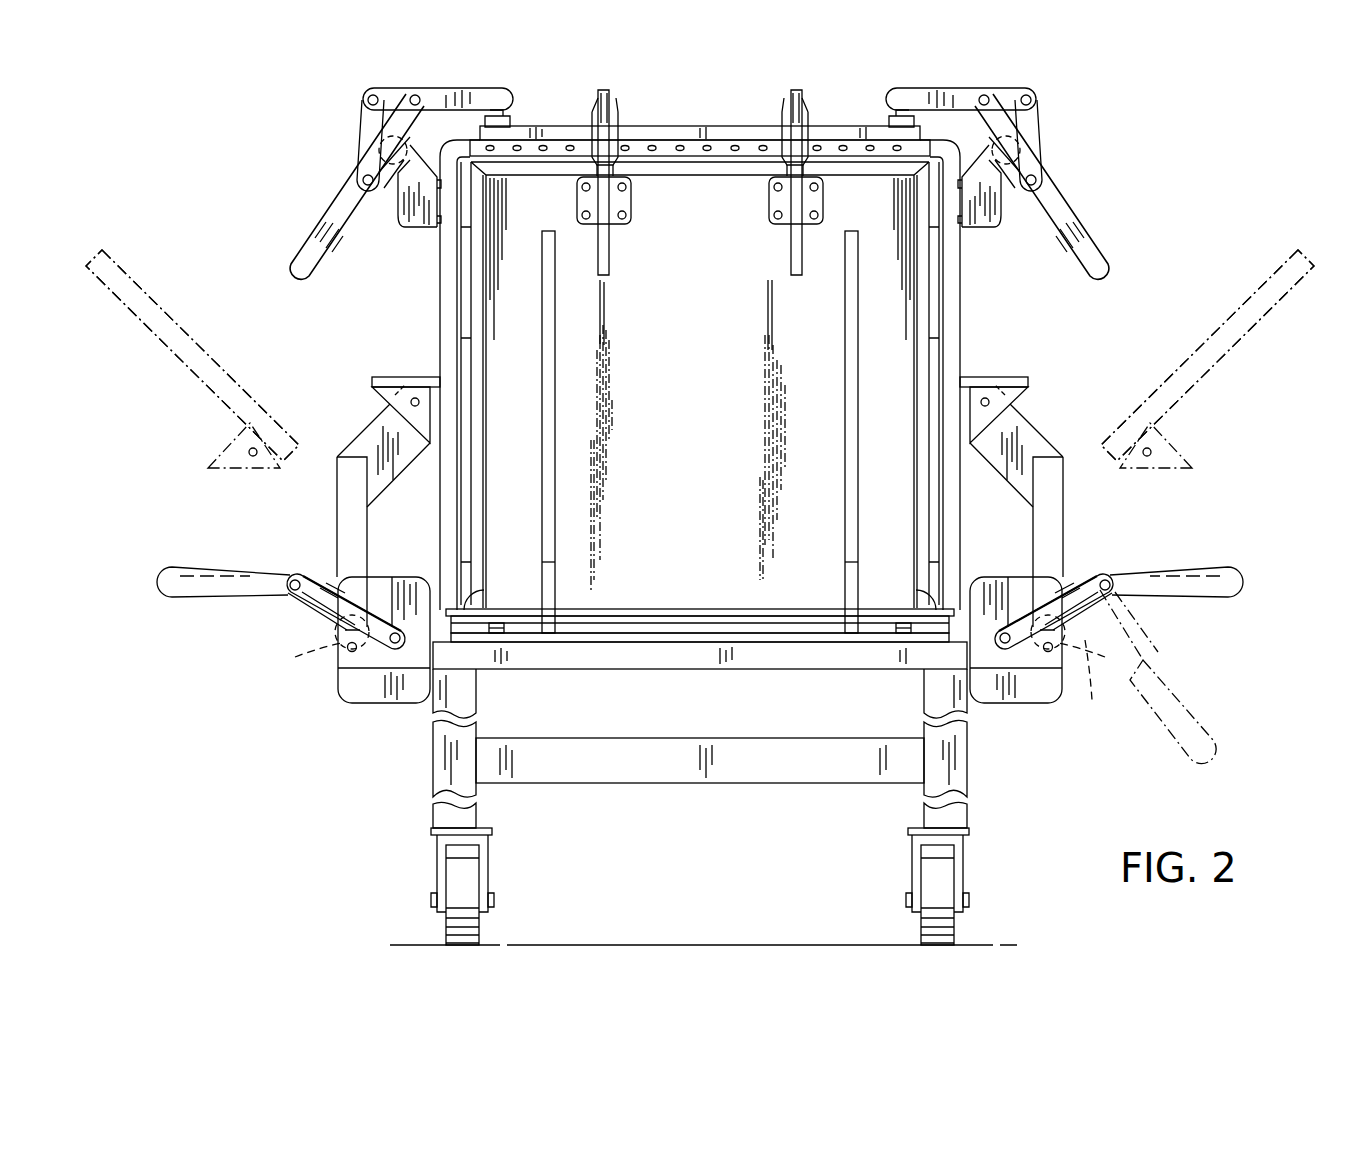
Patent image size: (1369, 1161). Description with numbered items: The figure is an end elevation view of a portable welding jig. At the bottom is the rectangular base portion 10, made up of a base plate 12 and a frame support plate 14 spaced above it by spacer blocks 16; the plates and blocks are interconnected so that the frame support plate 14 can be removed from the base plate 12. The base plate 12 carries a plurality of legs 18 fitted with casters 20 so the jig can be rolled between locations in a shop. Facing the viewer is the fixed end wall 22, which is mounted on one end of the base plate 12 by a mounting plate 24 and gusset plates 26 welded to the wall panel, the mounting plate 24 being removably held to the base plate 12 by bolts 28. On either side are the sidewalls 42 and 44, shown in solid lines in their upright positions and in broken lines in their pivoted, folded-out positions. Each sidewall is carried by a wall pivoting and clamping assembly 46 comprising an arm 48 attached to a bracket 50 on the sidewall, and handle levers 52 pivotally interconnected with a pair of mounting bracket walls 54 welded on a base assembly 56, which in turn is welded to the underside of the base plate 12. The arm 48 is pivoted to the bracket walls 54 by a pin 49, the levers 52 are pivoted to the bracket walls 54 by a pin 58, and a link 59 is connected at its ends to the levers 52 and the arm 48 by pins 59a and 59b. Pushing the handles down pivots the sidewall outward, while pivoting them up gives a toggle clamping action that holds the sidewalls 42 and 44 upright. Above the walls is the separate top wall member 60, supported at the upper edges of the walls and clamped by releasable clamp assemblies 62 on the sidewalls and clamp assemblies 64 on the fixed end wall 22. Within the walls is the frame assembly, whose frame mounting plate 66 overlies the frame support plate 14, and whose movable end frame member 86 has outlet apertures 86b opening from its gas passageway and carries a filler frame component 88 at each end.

The base portion 10 is at (712, 670).
The base plate 12 is at (767, 656).
The frame support plate 14 is at (603, 616).
The spacer blocks 16 is at (653, 628).
The legs 18 is at (478, 790).
The casters 20 is at (470, 890).
The fixed end wall 22 is at (700, 385).
The mounting plate 24 is at (623, 642).
The gusset plates 26 is at (547, 372).
The bolts 28 is at (497, 637).
The sidewall 42 is at (452, 297).
The sidewall 44 is at (948, 298).
The wall pivoting and clamping assembly 46 is at (304, 552).
The arm 48 is at (368, 411).
The pin 49 is at (345, 652).
The bracket 50 is at (419, 368).
The levers 52 is at (335, 615).
The mounting bracket walls 54 is at (375, 658).
The base assembly 56 is at (403, 712).
The pin 58 is at (403, 630).
The link 59 is at (333, 632).
The pin 59a is at (298, 596).
The pin 59b is at (330, 650).
The top wall member 60 is at (678, 126).
The clamp assemblies 62 is at (370, 132).
The clamp assemblies 64 is at (622, 103).
The frame mounting plate 66 is at (466, 605).
The end frame member 86 is at (557, 148).
The outlet apertures 86b is at (680, 152).
The filler frame component 88 is at (467, 273).